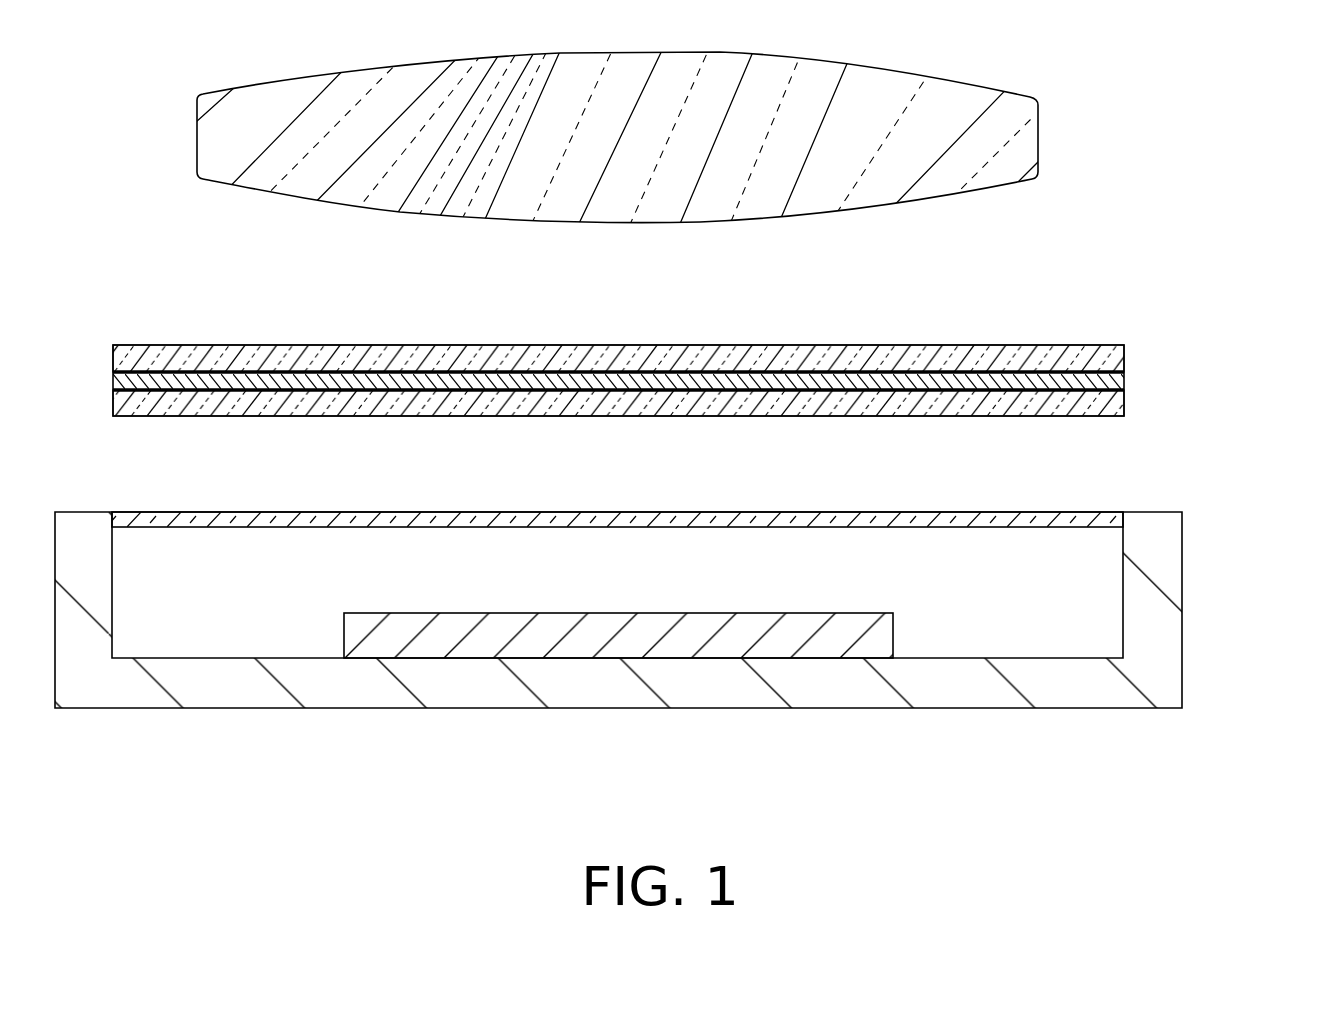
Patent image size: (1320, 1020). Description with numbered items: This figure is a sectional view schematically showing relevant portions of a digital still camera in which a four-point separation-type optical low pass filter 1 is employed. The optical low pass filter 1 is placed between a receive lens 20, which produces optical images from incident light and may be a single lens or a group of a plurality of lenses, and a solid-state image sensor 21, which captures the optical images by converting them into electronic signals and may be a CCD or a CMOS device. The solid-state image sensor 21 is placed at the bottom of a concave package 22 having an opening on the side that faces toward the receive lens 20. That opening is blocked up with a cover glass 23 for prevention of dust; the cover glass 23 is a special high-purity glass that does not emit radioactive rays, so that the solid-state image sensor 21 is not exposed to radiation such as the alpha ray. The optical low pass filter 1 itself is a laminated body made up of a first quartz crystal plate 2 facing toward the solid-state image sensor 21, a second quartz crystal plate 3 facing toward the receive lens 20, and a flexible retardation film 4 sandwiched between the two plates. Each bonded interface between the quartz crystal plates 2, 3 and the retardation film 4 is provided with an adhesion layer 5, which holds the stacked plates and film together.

The optical low pass filter 1 is at (1083, 303).
The first quartz crystal plate 2 is at (1124, 408).
The second quartz crystal plate 3 is at (1124, 352).
The retardation film 4 is at (1124, 381).
The adhesion layer 5 is at (1124, 372).
The receive lens 20 is at (1040, 137).
The solid-state image sensor 21 is at (893, 628).
The concave package 22 is at (1170, 622).
The cover glass 23 is at (986, 511).